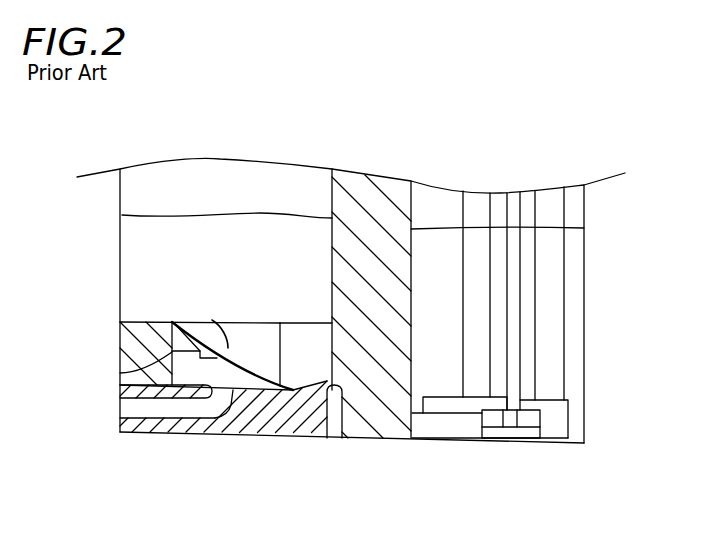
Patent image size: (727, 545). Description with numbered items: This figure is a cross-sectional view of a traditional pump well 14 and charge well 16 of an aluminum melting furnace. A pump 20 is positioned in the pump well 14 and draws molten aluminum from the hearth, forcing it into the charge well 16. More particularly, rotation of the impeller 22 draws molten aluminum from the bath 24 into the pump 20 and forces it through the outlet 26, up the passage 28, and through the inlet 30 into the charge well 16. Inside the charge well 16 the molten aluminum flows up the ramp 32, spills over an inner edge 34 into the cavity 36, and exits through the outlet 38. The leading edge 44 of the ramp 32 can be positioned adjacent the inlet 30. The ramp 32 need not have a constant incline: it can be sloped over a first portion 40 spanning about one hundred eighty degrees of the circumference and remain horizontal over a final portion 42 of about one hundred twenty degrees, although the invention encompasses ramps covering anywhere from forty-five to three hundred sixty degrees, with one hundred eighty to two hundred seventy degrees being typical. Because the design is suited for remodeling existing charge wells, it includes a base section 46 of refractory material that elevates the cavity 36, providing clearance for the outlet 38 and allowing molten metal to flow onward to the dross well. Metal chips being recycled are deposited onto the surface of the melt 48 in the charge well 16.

The pump well 14 is at (573, 283).
The charge well 16 is at (208, 253).
The pump 20 is at (558, 422).
The impeller 22 is at (523, 423).
The bath 24 is at (452, 267).
The outlet 26 is at (437, 428).
The passage 28 is at (382, 405).
The inlet 30 is at (327, 382).
The ramp 32 is at (212, 320).
The inner edge 34 is at (262, 322).
The cavity 36 is at (265, 351).
The outlet 38 is at (183, 410).
The first 180° portion 40 is at (120, 373).
The final about 120° portion 42 is at (312, 323).
The leading edge 44 is at (341, 437).
The base section 46 is at (263, 417).
The melt 48 is at (147, 215).